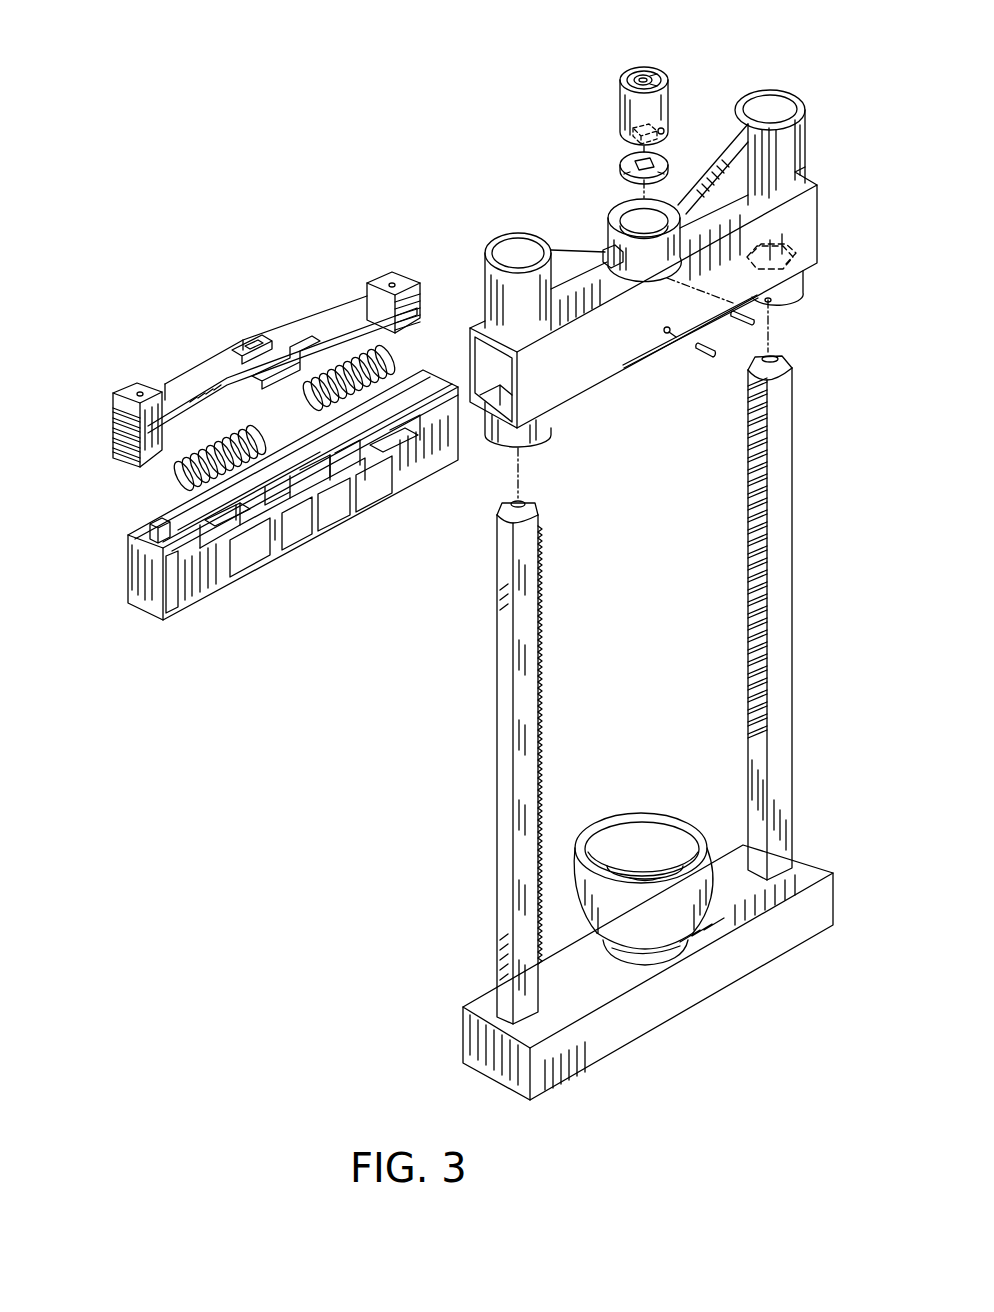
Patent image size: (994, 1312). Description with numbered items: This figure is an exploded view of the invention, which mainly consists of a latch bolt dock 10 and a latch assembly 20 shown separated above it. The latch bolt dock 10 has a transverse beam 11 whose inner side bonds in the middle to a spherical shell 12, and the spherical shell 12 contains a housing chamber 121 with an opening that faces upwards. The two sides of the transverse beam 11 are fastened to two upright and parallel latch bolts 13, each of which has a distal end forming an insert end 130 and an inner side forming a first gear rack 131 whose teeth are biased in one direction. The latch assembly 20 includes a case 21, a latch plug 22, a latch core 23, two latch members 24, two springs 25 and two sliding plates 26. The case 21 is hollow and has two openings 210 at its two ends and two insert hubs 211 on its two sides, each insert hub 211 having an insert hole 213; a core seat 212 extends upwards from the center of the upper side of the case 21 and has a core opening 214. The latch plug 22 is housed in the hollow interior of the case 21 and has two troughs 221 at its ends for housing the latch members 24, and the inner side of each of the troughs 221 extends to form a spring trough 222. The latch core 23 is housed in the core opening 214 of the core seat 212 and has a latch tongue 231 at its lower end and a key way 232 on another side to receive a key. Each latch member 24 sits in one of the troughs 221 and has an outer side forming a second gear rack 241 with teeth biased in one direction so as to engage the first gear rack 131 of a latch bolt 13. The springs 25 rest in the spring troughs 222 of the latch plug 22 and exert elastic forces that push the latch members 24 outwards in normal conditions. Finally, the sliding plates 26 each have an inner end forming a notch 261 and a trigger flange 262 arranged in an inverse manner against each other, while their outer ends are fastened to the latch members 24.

The latch bolt dock 10 is at (640, 605).
The transverse beam 11 is at (610, 1027).
The spherical shell 12 is at (698, 930).
The housing chamber 121 is at (643, 825).
The latch bolts 13 is at (470, 805).
The insert end 130 is at (497, 518).
The first gear rack 131 is at (745, 662).
The latch assembly 20 is at (400, 145).
The case 21 is at (598, 300).
The openings 210 is at (495, 385).
The insert hubs 211 is at (767, 303).
The core seat 212 is at (608, 240).
The insert hole 213 is at (510, 250).
The core opening 214 is at (658, 213).
The latch plug 22 is at (457, 392).
The troughs 221 is at (402, 425).
The spring trough 222 is at (217, 518).
The latch core 23 is at (622, 108).
The latch tongue 231 is at (640, 148).
The key way 232 is at (645, 77).
The latch members 24 is at (130, 386).
The second gear rack 241 is at (112, 420).
The springs 25 is at (180, 488).
The sliding plates 26 is at (345, 318).
The notch 261 is at (288, 365).
The trigger flange 262 is at (245, 356).